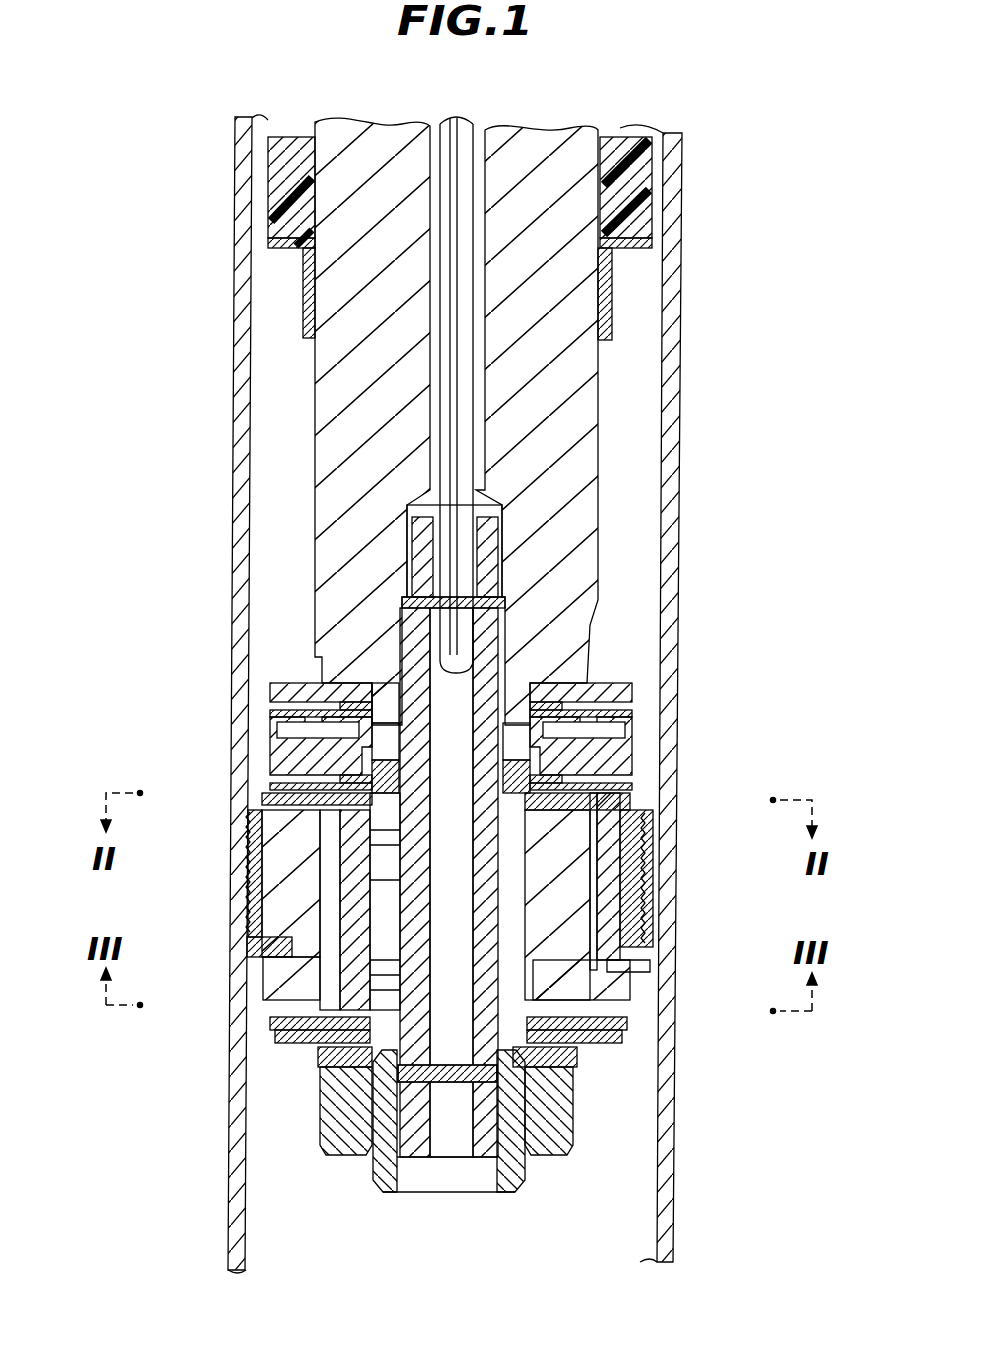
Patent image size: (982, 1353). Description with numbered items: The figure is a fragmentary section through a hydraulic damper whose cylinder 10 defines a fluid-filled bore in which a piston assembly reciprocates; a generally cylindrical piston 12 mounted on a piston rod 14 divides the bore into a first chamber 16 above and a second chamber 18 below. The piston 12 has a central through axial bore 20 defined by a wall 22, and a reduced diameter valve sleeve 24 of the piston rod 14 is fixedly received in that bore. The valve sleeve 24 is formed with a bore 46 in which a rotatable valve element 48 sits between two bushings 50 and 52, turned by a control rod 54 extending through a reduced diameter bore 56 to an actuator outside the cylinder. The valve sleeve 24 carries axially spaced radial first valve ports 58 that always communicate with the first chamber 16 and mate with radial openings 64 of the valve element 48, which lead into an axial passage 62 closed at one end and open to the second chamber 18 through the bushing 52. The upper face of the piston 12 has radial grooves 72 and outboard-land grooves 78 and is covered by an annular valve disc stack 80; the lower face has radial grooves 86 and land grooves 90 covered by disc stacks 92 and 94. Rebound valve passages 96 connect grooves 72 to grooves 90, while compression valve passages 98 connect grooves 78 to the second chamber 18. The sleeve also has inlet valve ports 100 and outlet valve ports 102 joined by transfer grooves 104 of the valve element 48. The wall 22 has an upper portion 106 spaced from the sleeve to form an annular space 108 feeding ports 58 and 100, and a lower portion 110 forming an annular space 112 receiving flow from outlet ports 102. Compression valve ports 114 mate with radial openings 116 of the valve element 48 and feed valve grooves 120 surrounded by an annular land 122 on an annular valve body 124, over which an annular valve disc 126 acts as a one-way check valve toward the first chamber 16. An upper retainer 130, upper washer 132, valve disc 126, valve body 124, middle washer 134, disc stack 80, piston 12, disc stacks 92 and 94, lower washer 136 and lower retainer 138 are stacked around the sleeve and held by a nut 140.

The cylinder 10 is at (673, 423).
The piston 12 is at (640, 965).
The piston rod 14 is at (620, 382).
The first chamber 16 is at (296, 448).
The second chamber 18 is at (320, 1203).
The through axial bore 20 is at (625, 945).
The wall 22 is at (255, 918).
The reduced diameter valve sleeve 24 is at (372, 1170).
The bore 46 is at (410, 1192).
The valve element 48 is at (505, 600).
The bushing 50 is at (407, 540).
The bushing 52 is at (480, 1165).
The control rod 54 is at (450, 290).
The reduced diameter bore 56 is at (452, 372).
The first valve ports 58 is at (640, 805).
The axial passage 62 is at (468, 962).
The radial openings 64 is at (625, 880).
The radial grooves 72 is at (632, 745).
The groove 78 is at (620, 780).
The annular valve disc stack 80 is at (360, 800).
The radial grooves 86 is at (615, 1035).
The groove 90 is at (355, 1040).
The annular valve disc stack 92 is at (350, 1060).
The annular valve disc stack 94 is at (370, 1090).
The valve passages 96 is at (330, 955).
The valve passages 98 is at (612, 905).
The inlet valve ports 100 is at (345, 825).
The outlet valve ports 102 is at (355, 975).
The transfer grooves 104 is at (325, 940).
The upper portion 106 is at (648, 835).
The annular space 108 is at (360, 860).
The lower portion 110 is at (350, 1010).
The annular space 112 is at (610, 1005).
The compression valve ports 114 is at (385, 700).
The radial openings 116 is at (400, 690).
The valve grooves 120 is at (275, 710).
The annular land 122 is at (630, 705).
The annular valve body 124 is at (275, 745).
The annular valve disc 126 is at (272, 690).
The upper retainer 130 is at (600, 675).
The upper washer 132 is at (600, 640).
The middle washer 134 is at (340, 785).
The lower washer 136 is at (390, 1110).
The lower retainer 138 is at (590, 1062).
The nut 140 is at (565, 1125).